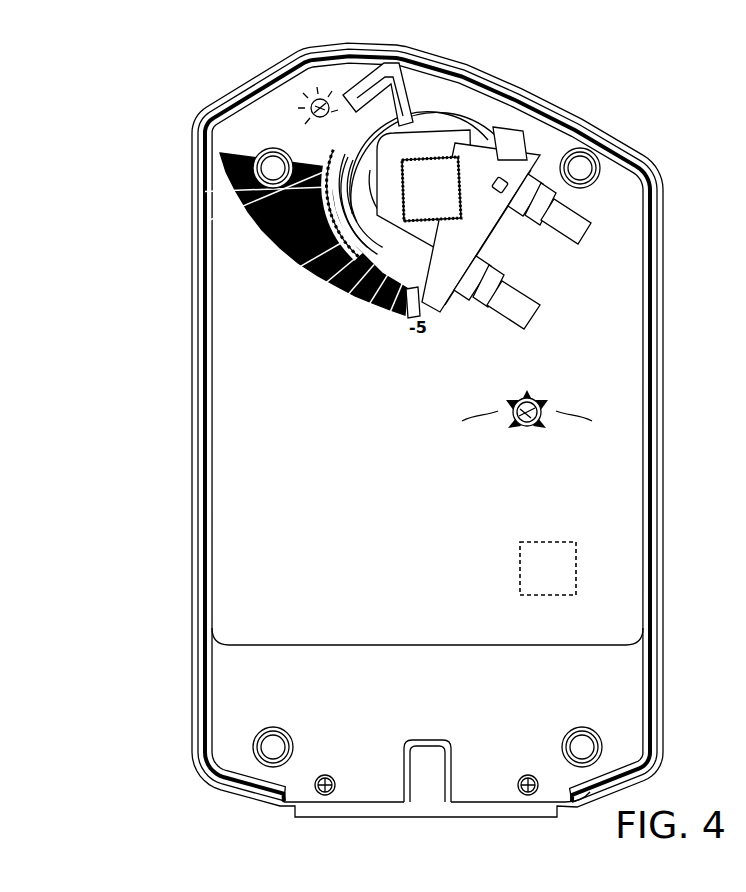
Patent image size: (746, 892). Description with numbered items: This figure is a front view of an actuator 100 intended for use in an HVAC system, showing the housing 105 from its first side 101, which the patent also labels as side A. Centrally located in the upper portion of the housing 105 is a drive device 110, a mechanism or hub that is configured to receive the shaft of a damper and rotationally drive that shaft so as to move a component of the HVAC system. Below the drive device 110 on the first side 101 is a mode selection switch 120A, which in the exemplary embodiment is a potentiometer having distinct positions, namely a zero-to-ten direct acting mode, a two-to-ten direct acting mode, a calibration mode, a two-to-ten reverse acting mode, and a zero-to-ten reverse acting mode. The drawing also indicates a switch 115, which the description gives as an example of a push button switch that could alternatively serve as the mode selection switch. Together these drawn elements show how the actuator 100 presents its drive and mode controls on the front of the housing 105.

The actuator 100 is at (157, 377).
The first side 101 is at (236, 527).
The housing 105 is at (661, 492).
The drive device 110 is at (431, 168).
The switch 115 is at (563, 562).
The mode selection switch 120A is at (560, 366).